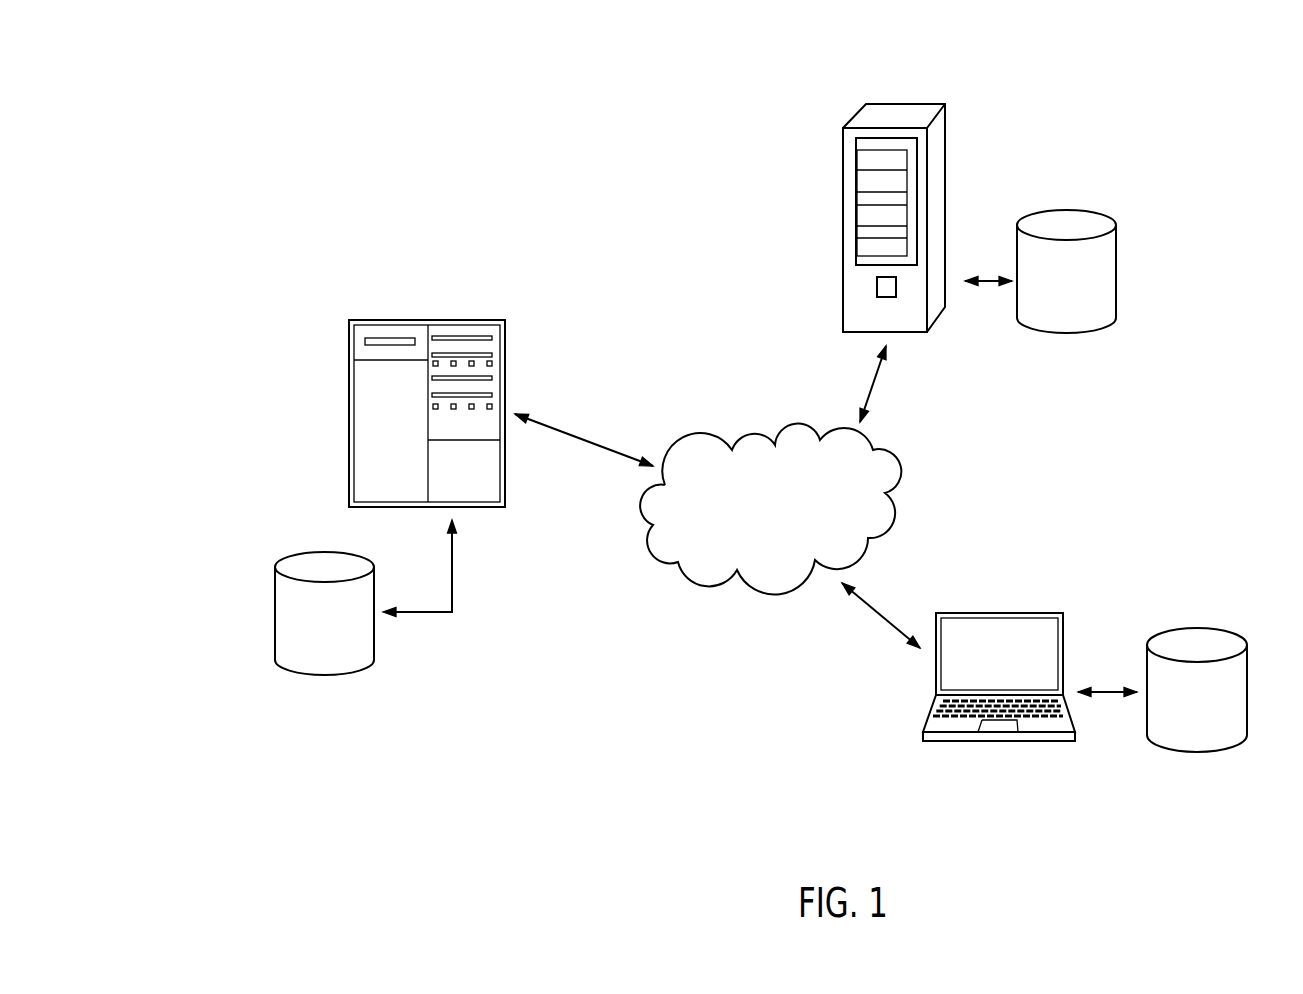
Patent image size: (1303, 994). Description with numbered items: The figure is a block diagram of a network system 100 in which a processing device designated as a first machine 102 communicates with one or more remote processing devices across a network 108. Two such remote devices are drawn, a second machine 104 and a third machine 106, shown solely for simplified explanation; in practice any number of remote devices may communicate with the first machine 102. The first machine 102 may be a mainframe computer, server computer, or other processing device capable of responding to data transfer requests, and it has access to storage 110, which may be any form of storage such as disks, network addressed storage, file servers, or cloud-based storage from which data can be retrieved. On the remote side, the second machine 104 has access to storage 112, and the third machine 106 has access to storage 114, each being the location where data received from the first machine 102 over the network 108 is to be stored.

The network system 100 is at (1190, 88).
The first machine 102 is at (418, 320).
The second machine 104 is at (843, 181).
The third machine 106 is at (1027, 613).
The network 108 is at (702, 582).
The storage 110 is at (275, 625).
The storage 112 is at (1116, 277).
The storage 114 is at (1205, 748).